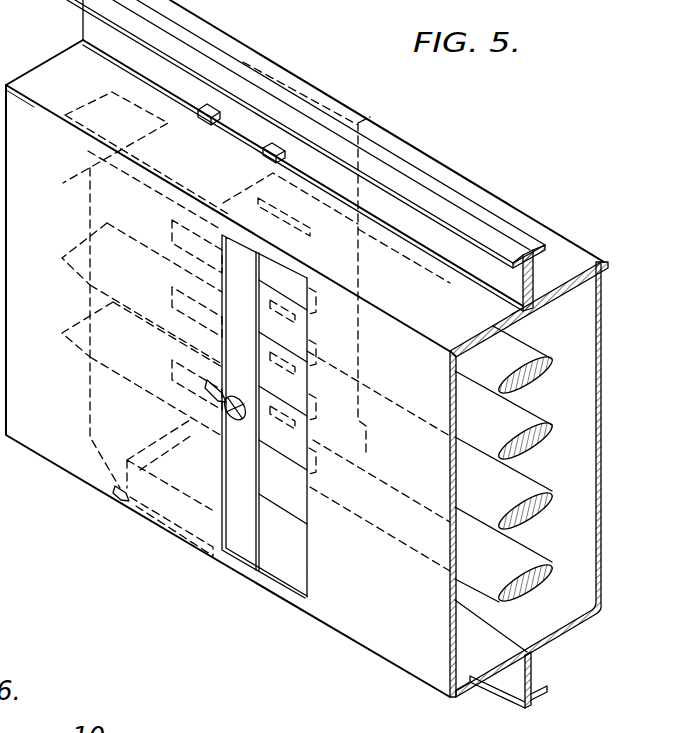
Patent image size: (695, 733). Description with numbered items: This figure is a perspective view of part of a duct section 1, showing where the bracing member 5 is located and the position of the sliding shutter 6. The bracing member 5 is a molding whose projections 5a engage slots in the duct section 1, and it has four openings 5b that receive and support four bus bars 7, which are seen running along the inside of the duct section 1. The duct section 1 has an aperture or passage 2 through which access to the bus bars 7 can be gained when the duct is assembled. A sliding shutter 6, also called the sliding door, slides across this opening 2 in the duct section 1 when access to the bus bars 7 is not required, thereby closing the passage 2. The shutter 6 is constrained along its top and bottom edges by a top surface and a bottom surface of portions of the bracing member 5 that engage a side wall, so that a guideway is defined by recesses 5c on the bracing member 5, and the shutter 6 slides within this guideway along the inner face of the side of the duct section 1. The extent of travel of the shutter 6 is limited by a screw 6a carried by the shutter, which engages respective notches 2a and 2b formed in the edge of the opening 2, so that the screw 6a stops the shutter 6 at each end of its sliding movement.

The duct section 1 is at (557, 233).
The aperture or passage 2 is at (308, 540).
The notch 2a is at (318, 458).
The notch 2b is at (205, 392).
The bracing member 5 is at (272, 135).
The projections 5a is at (262, 157).
The openings 5b is at (286, 160).
The recesses 5c is at (67, 193).
The sliding shutter 6 is at (243, 548).
The screw 6a is at (226, 424).
The bus bars 7 is at (548, 370).